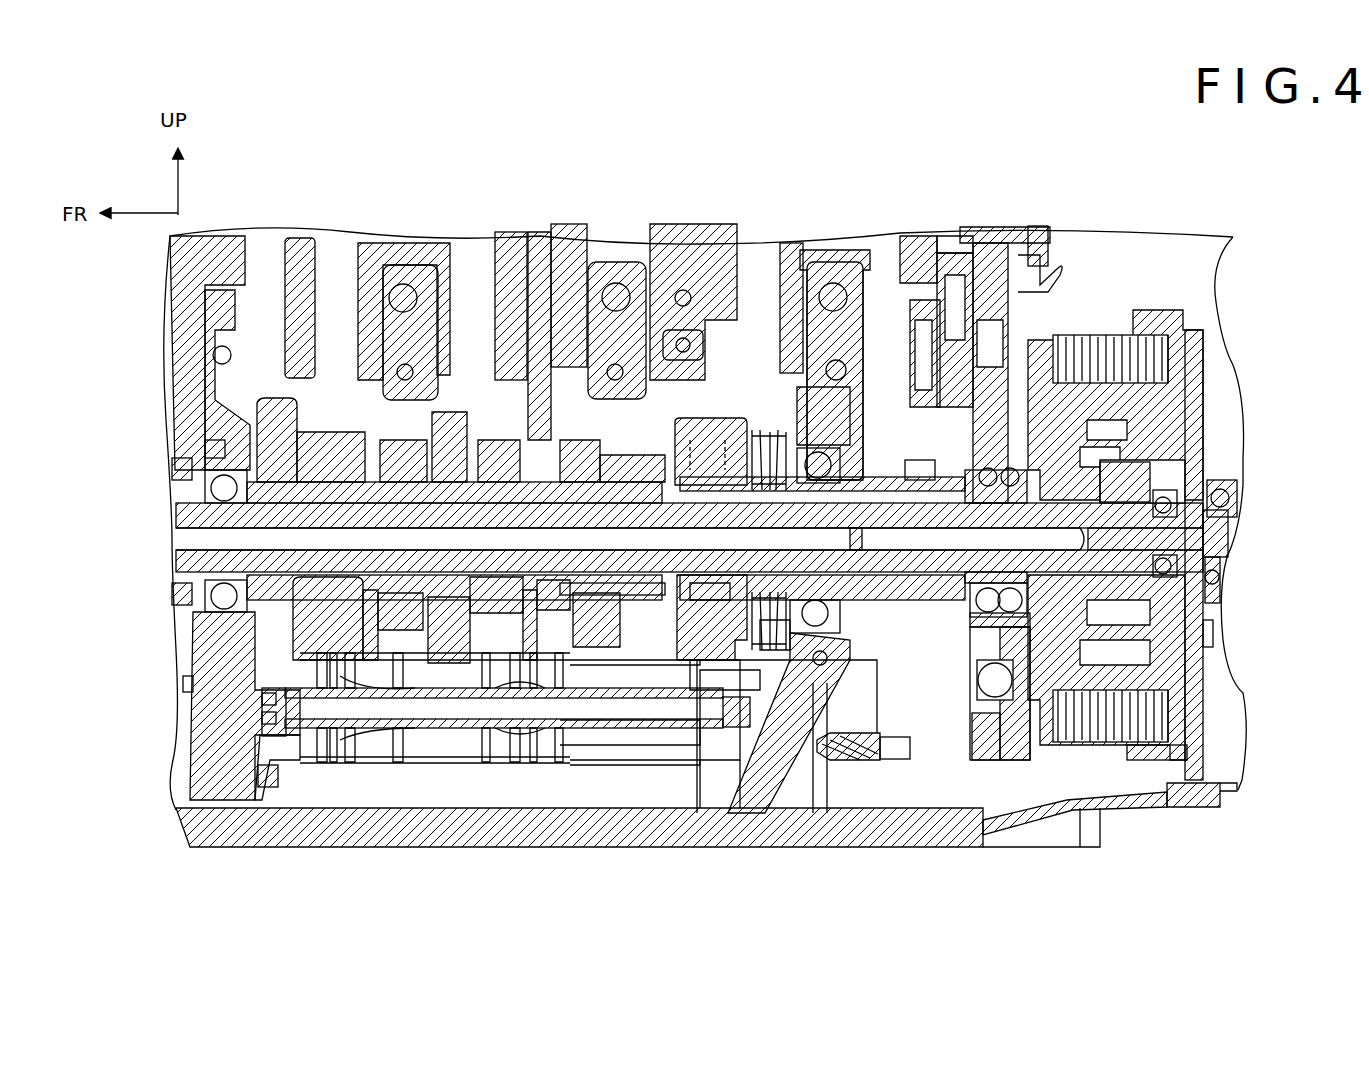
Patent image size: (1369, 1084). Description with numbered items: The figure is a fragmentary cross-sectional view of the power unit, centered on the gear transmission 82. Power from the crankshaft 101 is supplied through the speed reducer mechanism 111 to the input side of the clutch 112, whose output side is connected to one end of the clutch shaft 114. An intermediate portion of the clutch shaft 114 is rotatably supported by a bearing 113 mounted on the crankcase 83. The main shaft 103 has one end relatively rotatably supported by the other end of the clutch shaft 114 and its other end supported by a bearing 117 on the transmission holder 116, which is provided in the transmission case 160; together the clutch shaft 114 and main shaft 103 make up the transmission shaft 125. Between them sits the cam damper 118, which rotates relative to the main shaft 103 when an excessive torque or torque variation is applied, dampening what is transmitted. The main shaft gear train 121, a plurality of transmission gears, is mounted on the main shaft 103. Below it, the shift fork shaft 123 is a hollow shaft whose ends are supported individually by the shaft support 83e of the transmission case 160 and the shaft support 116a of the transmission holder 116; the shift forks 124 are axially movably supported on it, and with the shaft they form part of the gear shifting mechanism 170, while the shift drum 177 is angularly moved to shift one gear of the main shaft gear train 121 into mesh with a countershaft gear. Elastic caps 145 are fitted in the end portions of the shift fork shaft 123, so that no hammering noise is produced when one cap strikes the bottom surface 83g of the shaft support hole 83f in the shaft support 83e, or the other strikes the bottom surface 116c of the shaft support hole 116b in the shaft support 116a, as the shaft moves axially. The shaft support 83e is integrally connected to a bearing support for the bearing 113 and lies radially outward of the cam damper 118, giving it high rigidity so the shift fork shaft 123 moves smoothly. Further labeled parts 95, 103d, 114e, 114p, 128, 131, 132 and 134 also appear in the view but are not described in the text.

The gear transmission 82 is at (165, 436).
The crankcase 83 is at (848, 248).
The shaft support 83e is at (718, 745).
The shaft support hole 83f is at (740, 690).
The bottom surface 83g is at (812, 640).
The cover 95 is at (1197, 806).
The crankshaft 101 is at (950, 240).
The main shaft 103 is at (495, 465).
The shift fork hub 103d is at (640, 460).
The speed reducer mechanism 111 is at (1046, 280).
The clutch 112 is at (1110, 328).
The bearing 113 is at (822, 375).
The clutch shaft 114 is at (903, 512).
The fastening bolt 114e is at (848, 748).
The holder projection 114p is at (1220, 588).
The transmission holder 116 is at (215, 650).
The shaft support 116a is at (328, 740).
The shaft support hole 116b is at (292, 745).
The bottom surface 116c is at (185, 690).
The bearing 117 is at (205, 598).
The cam damper 118 is at (710, 425).
The main shaft gear train 121 is at (337, 415).
The shift fork shaft 123 is at (452, 752).
The shift forks 124 is at (378, 762).
The transmission shaft 125 is at (200, 538).
The collar 128 is at (600, 652).
The spring 131 is at (765, 430).
The shifter 132 is at (668, 330).
The washer 134 is at (692, 645).
The caps 145 is at (262, 732).
The transmission case 160 is at (195, 838).
The gear shifting mechanism 170 is at (490, 778).
The shift drum 177 is at (632, 748).